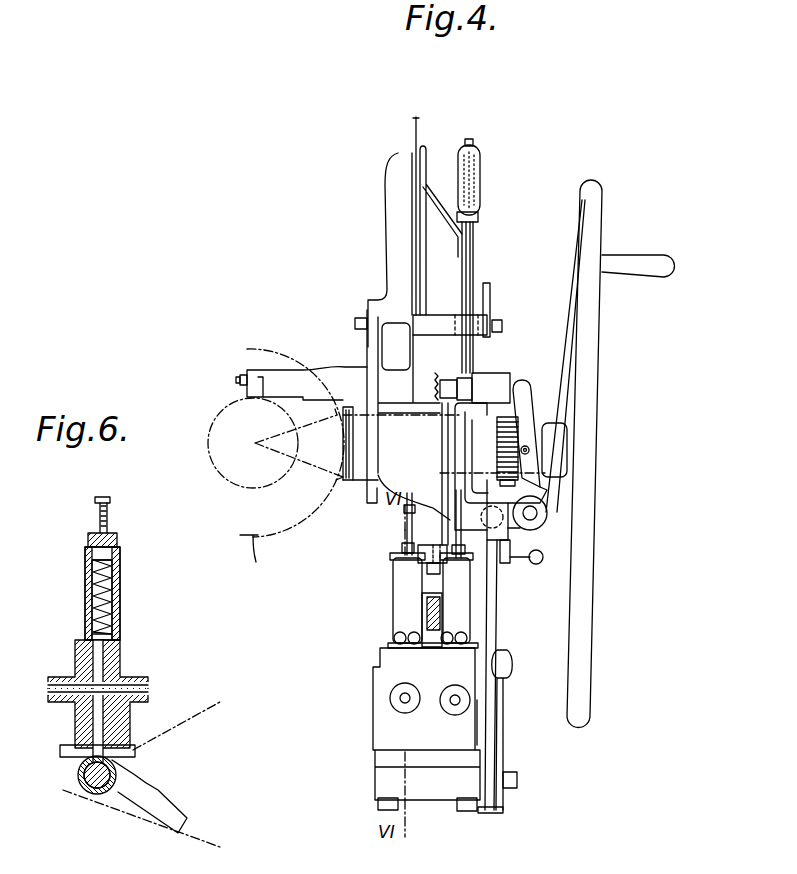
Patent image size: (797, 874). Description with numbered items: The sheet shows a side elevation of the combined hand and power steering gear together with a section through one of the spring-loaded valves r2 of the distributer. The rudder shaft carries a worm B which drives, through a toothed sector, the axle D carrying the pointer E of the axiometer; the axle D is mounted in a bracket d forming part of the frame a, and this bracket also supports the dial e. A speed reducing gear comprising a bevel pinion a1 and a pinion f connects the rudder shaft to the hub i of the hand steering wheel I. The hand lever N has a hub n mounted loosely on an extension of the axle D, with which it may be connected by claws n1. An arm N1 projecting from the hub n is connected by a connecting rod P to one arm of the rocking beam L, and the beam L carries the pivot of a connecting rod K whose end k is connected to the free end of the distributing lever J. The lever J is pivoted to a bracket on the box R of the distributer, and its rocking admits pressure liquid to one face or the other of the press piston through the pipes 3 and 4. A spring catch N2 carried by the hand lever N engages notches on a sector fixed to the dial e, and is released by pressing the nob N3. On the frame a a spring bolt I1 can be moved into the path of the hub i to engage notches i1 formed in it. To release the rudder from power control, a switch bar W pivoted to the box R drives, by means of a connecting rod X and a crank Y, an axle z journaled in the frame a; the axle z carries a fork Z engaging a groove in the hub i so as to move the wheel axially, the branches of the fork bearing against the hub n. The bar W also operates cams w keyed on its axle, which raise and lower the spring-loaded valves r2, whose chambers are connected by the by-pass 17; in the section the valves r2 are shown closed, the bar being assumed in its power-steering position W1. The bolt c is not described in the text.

In FIG. 4, the dial e is at (414, 122).
In FIG. 4, the pointer E is at (420, 148).
In FIG. 4, the nob N3 is at (470, 142).
In FIG. 4, the hand lever N is at (473, 249).
In FIG. 4, the spring catch N2 is at (493, 318).
In FIG. 4, the arm N1 is at (487, 393).
In FIG. 4, the hub n is at (498, 376).
In FIG. 4, the claws n1 is at (443, 398).
In FIG. 4, the axle D is at (243, 375).
In FIG. 4, the bolt c is at (240, 381).
In FIG. 4, the bracket d is at (377, 347).
In FIG. 4, the worm B is at (250, 488).
In FIG. 4, the pinion f is at (318, 480).
In FIG. 4, the frame a is at (390, 458).
In FIG. 4, the bevel pinion a1 is at (254, 540).
In FIG. 4, the notches i1 is at (510, 440).
In FIG. 4, the hub i is at (558, 450).
In FIG. 4, the fork Z is at (524, 383).
In FIG. 4, the axle z is at (530, 513).
In FIG. 4, the crank Y is at (513, 537).
In FIG. 4, the hand steering wheel I is at (590, 397).
In FIG. 4, the spring bolt I1 is at (538, 567).
In FIG. 4, the connecting rod X is at (495, 620).
In FIG. 4, the switch bar W is at (500, 734).
In FIG. 6, the switch bar W is at (203, 715).
In FIG. 4, the connecting rod P is at (443, 513).
In FIG. 4, the rocking beam L is at (418, 555).
In FIG. 4, the connecting rod K is at (448, 582).
In FIG. 4, the lever J is at (428, 608).
In FIG. 4, the end k is at (420, 627).
In FIG. 4, the box R is at (400, 730).
In FIG. 4, the pipe 4 is at (405, 698).
In FIG. 4, the pipe 3 is at (455, 700).
In FIG. 6, the by-pass 17 is at (85, 607).
In FIG. 6, the spring-loaded valves r2 is at (112, 628).
In FIG. 6, the cams w is at (82, 796).
In FIG. 6, the position W1 is at (200, 793).